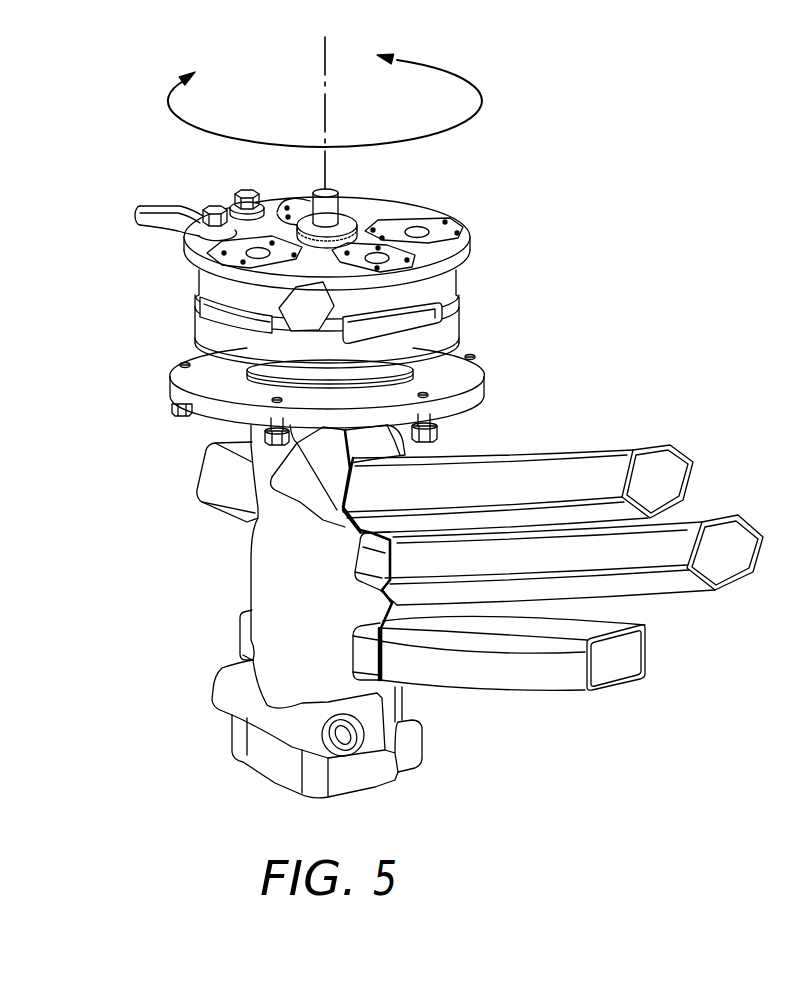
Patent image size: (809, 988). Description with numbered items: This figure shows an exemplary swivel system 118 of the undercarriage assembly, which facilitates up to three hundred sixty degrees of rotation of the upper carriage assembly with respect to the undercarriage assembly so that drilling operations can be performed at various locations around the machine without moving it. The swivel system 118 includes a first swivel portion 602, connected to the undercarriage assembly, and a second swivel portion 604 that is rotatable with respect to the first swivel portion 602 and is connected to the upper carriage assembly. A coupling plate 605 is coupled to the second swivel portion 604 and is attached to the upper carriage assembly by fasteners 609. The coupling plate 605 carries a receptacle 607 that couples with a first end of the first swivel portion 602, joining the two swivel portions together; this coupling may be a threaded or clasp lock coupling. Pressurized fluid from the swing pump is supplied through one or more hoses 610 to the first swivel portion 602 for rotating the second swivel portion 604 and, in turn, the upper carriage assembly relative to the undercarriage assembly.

The swivel system 118 is at (596, 158).
The first swivel portion 602 is at (280, 592).
The second swivel portion 604 is at (213, 279).
The coupling plate 605 is at (460, 384).
The receptacle 607 is at (250, 372).
The fasteners 609 is at (170, 402).
The hoses 610 is at (530, 470).